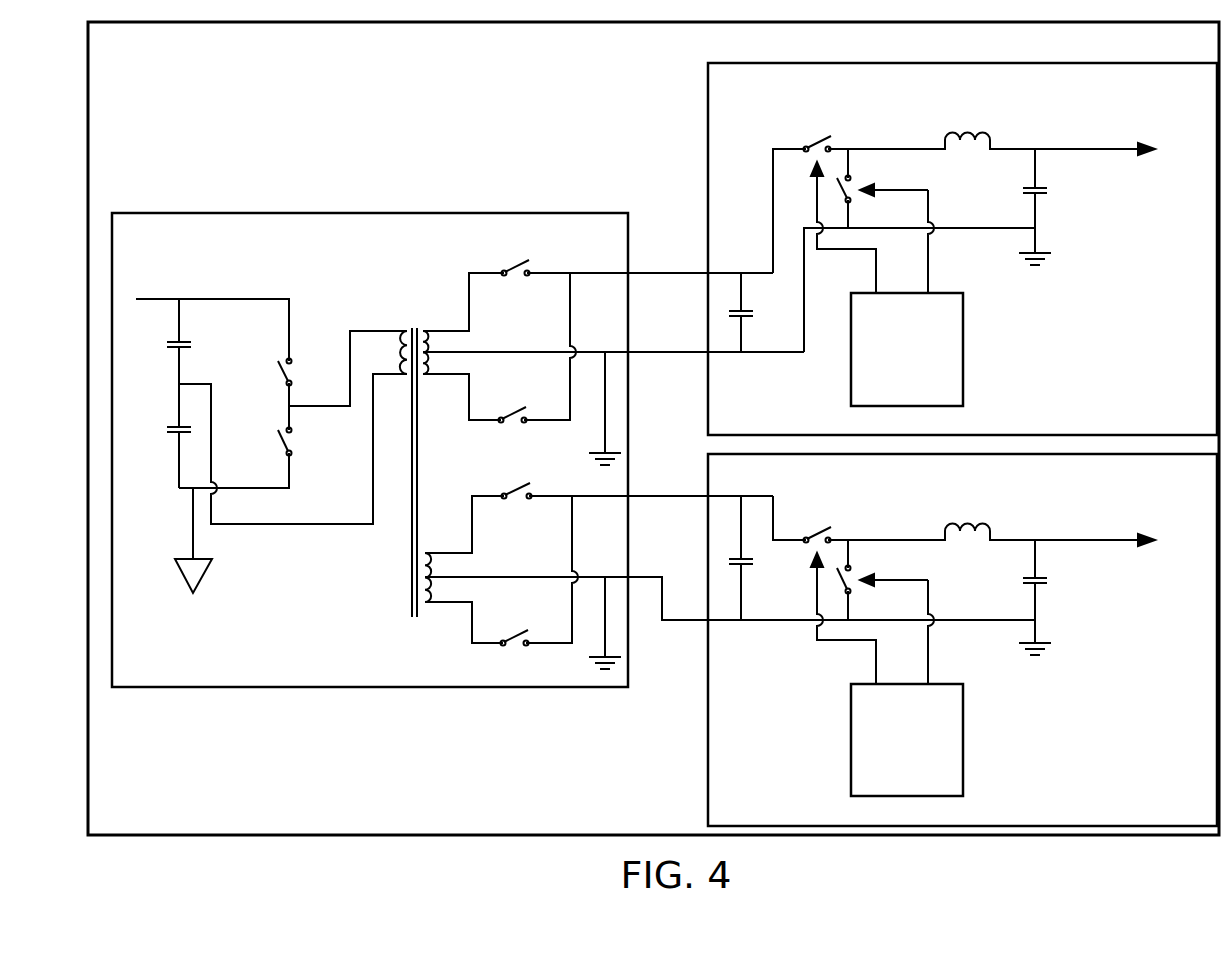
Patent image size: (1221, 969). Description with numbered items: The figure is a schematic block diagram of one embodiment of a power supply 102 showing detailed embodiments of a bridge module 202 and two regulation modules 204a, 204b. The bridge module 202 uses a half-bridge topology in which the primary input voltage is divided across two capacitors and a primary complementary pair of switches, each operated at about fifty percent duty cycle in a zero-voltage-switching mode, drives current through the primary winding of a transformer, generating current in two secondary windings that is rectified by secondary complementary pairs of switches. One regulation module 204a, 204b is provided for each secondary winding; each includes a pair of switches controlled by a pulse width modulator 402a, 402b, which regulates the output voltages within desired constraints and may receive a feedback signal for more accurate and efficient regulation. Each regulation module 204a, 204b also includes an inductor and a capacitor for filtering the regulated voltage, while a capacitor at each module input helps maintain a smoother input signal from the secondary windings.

The power supply 102 is at (680, 77).
The bridge module 202 is at (353, 268).
The regulation module 204a is at (940, 118).
The regulation module 204b is at (940, 509).
The pulse width modulator 402a is at (886, 398).
The pulse width modulator 402b is at (886, 788).